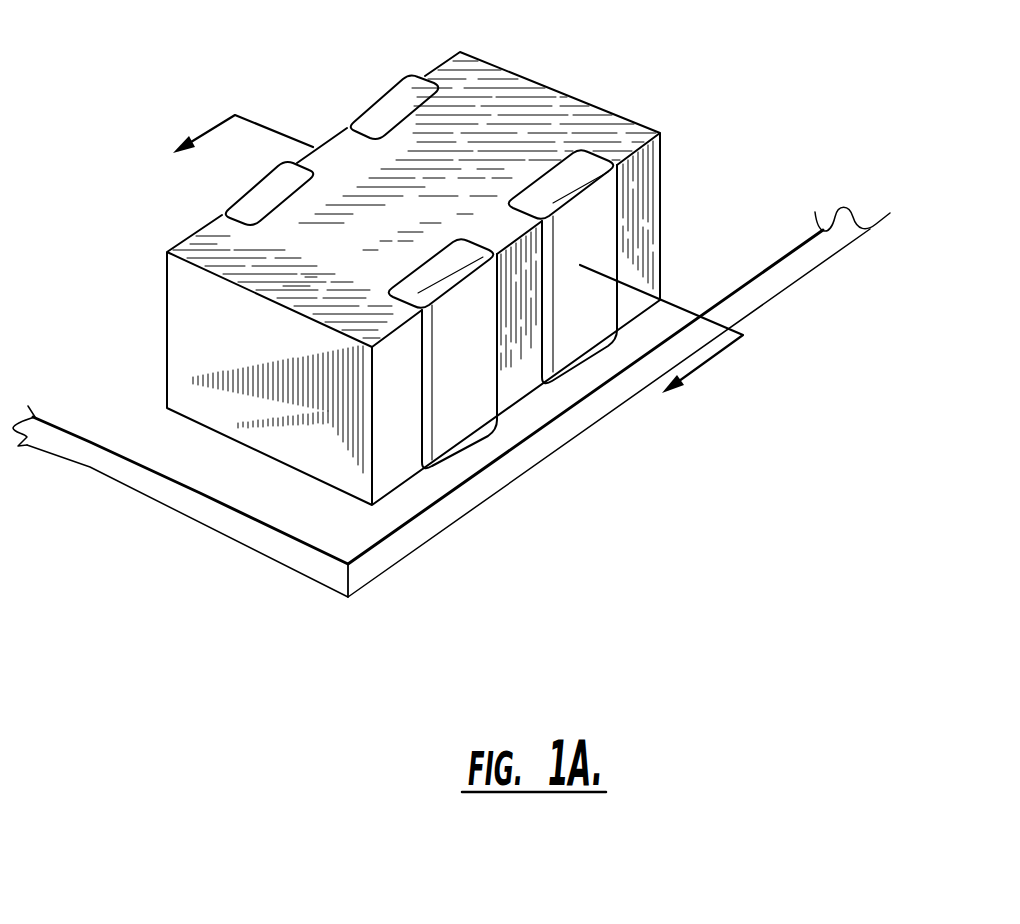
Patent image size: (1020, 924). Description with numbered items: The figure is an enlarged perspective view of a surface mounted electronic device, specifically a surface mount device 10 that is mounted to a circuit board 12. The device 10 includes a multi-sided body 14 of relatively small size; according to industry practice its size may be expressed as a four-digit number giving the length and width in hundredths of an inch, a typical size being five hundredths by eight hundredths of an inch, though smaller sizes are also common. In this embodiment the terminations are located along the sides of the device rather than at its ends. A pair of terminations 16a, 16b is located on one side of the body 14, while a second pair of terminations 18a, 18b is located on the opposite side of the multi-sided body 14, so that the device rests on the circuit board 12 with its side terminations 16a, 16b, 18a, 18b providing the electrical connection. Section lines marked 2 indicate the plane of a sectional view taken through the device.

The surface mount device 10 is at (451, 299).
The circuit board 12 is at (187, 445).
The multi-sided body 14 is at (542, 115).
The termination 16a is at (400, 107).
The termination 16b is at (222, 207).
The termination 18a is at (582, 332).
The termination 18b is at (463, 422).
The section line 2- 2 is at (760, 85).